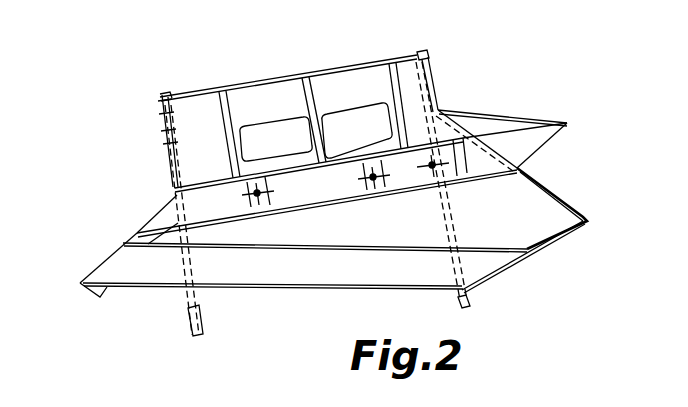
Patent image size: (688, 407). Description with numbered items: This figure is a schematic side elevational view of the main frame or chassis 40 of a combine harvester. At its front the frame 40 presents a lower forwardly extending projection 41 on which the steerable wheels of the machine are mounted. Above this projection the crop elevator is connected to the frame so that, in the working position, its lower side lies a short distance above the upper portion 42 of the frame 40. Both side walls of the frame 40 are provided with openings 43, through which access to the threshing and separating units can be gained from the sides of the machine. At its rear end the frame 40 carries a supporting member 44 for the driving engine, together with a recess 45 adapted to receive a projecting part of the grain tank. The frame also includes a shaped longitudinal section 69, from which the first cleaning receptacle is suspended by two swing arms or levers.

The frame or chassis 40 is at (200, 65).
The lower forwardly extending projection 41 is at (82, 256).
The upper portion of the frame 42 is at (135, 206).
The openings 43 is at (338, 117).
The supporting member for the driving engine 44 is at (528, 125).
The recess 45 is at (553, 164).
The shaped longitudinal section of the frame 69 is at (286, 278).